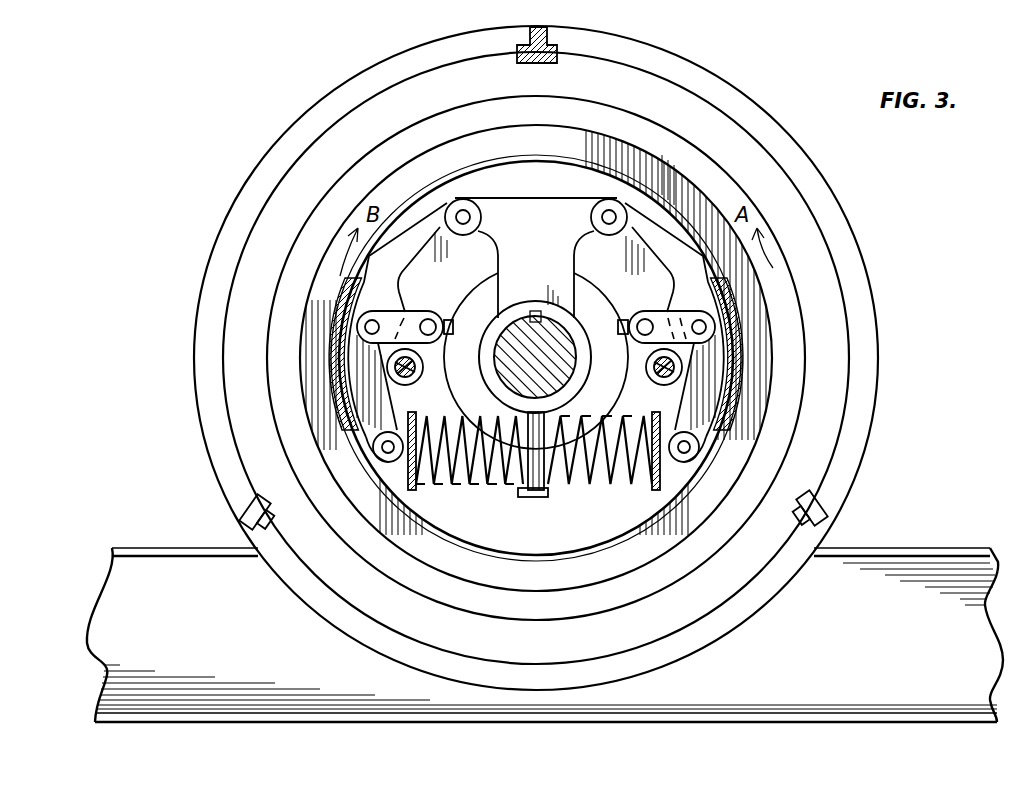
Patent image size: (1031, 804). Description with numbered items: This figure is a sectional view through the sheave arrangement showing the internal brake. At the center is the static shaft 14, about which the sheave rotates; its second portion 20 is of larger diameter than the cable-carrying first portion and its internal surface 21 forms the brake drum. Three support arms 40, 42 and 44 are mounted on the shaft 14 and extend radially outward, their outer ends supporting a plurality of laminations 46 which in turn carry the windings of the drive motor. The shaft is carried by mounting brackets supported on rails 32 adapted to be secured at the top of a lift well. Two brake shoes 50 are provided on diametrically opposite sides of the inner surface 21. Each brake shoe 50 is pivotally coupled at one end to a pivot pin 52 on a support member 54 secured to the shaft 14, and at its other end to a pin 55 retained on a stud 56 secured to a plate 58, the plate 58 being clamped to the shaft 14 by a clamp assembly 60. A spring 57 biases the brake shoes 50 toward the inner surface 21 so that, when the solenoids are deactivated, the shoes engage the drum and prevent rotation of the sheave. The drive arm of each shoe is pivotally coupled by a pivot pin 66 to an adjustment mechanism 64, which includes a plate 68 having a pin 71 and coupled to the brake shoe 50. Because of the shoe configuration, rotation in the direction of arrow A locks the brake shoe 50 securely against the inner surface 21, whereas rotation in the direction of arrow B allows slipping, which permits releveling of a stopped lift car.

The static shaft 14 is at (520, 362).
The second portion 20 is at (308, 313).
The internal surface 21 is at (330, 327).
The rails 32 is at (150, 578).
The support arm 40 is at (532, 42).
The support arm 42 is at (245, 508).
The support arm 44 is at (830, 505).
The laminations 46 is at (760, 193).
The brake shoe 50 is at (380, 270).
The pivot pin 52 is at (464, 212).
The support member 54 is at (552, 232).
The pin 55 is at (373, 447).
The stud 56 is at (442, 447).
The spring 57 is at (483, 477).
The plate 58 is at (410, 478).
The clamp assembly 60 is at (557, 502).
The adjustment mechanism 64 is at (434, 295).
The pivot pin 66 is at (392, 370).
The plate 68 is at (338, 282).
The pin 71 is at (430, 320).